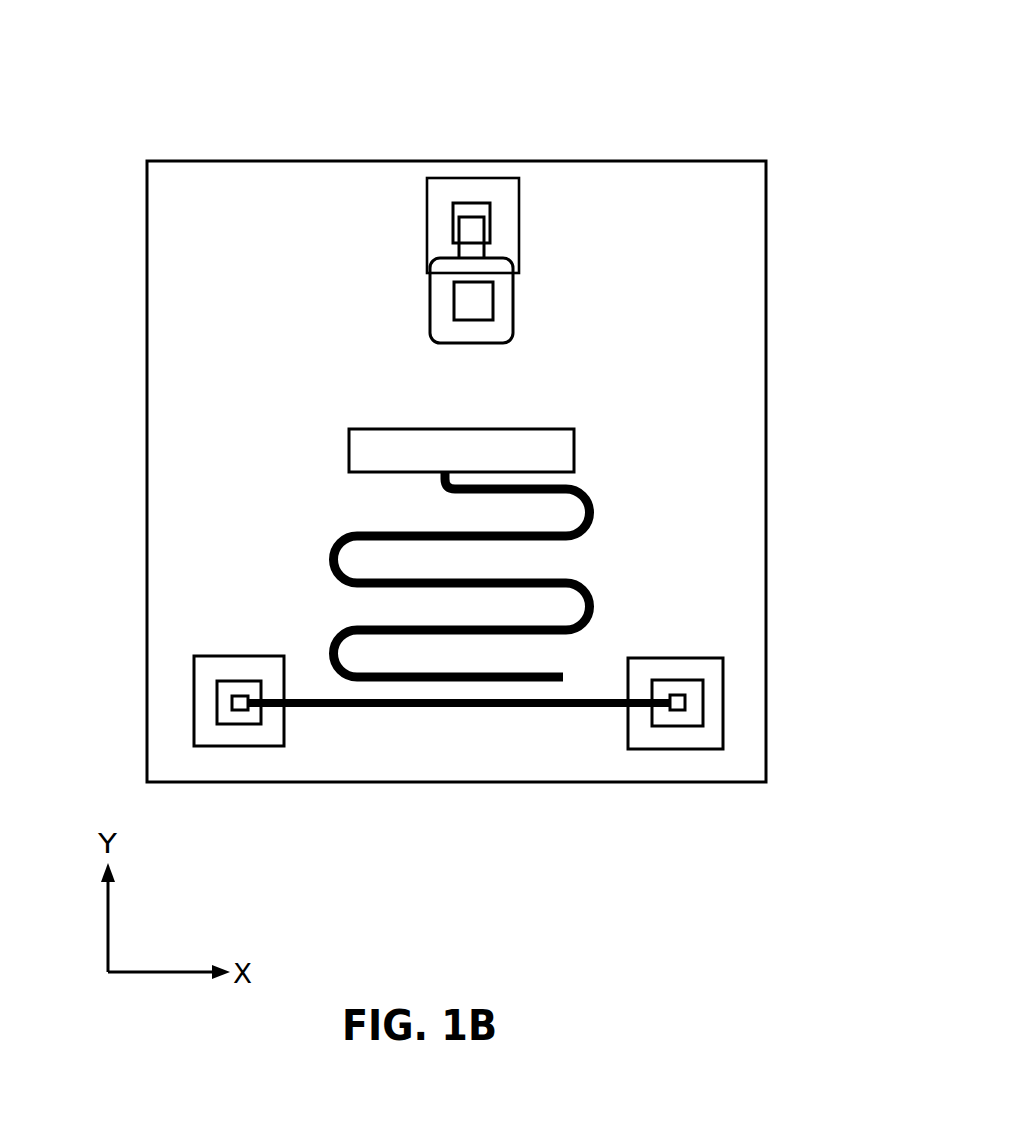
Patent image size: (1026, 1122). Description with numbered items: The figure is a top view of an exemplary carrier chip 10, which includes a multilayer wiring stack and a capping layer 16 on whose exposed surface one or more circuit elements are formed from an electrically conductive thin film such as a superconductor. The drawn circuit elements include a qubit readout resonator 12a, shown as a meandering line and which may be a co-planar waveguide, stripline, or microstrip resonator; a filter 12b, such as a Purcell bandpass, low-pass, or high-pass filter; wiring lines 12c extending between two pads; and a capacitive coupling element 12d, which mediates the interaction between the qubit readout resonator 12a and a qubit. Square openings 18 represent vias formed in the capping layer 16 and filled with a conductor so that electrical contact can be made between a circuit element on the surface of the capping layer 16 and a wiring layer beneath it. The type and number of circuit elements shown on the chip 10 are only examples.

The carrier chip 10 is at (100, 121).
The capping layer 16 is at (747, 262).
The openings 18 is at (438, 210).
The qubit readout resonator 12a is at (597, 513).
The filter 12b is at (517, 293).
The wiring lines 12c is at (422, 707).
The capacitive coupling element 12d is at (358, 429).